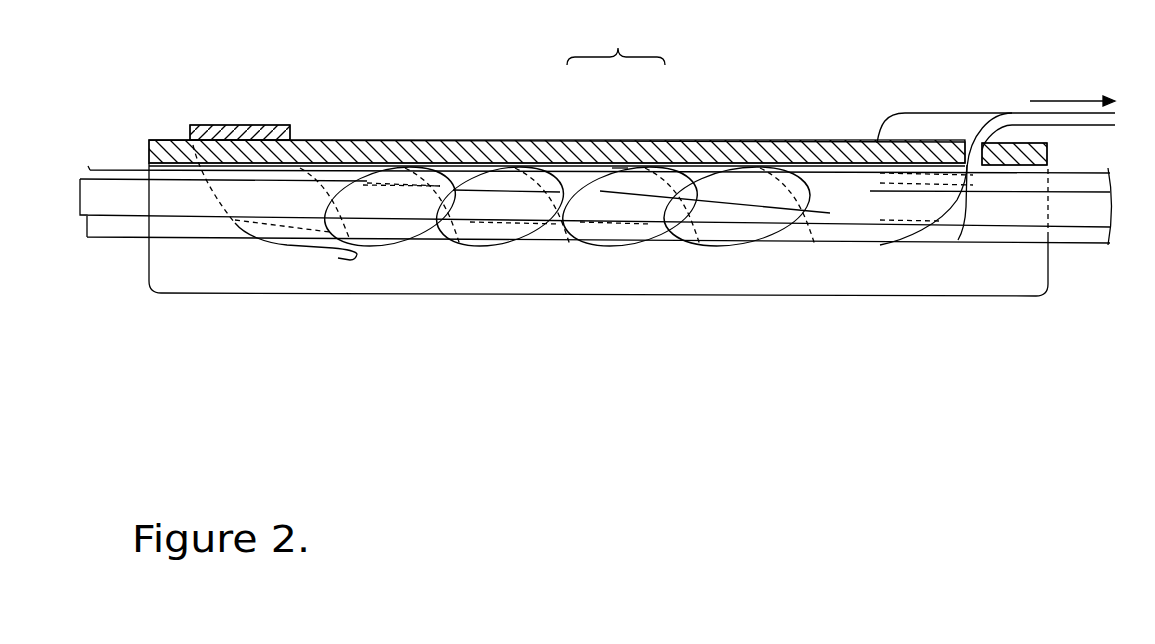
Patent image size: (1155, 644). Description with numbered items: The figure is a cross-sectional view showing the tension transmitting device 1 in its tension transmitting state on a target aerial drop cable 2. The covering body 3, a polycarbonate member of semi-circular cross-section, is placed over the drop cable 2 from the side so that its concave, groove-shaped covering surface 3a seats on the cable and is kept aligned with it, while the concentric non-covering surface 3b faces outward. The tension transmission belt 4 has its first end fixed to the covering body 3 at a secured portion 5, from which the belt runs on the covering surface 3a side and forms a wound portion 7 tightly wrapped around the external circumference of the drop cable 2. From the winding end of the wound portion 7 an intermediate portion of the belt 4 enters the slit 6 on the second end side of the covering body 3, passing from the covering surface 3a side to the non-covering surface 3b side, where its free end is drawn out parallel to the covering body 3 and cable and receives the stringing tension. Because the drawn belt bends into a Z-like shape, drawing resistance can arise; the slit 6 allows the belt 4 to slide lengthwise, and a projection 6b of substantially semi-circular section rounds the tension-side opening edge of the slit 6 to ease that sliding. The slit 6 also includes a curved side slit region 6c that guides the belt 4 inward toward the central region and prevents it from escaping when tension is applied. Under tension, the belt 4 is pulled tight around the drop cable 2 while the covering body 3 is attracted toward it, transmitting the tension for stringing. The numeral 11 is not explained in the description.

The tension transmitting device 1 is at (616, 39).
The drop cable 2 is at (692, 248).
The covering body 3 is at (557, 110).
The covering surface 3a is at (810, 168).
The non-covering surface 3b is at (742, 141).
The tension transmission belt 4 is at (619, 172).
The secured portion 5 is at (244, 128).
The slit 6 is at (996, 197).
The projection 6b is at (1001, 112).
The side slit region 6c is at (1008, 160).
The wound portion 7 is at (819, 264).
The spring end 11 is at (345, 258).